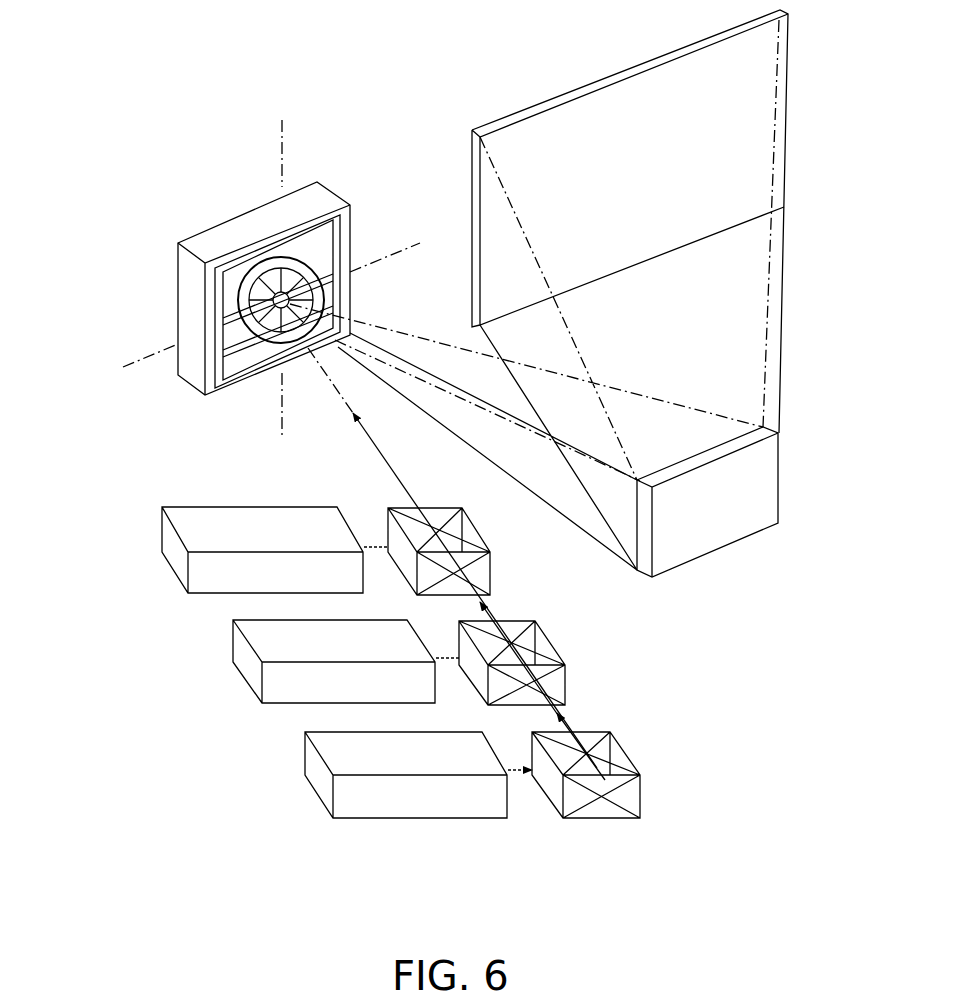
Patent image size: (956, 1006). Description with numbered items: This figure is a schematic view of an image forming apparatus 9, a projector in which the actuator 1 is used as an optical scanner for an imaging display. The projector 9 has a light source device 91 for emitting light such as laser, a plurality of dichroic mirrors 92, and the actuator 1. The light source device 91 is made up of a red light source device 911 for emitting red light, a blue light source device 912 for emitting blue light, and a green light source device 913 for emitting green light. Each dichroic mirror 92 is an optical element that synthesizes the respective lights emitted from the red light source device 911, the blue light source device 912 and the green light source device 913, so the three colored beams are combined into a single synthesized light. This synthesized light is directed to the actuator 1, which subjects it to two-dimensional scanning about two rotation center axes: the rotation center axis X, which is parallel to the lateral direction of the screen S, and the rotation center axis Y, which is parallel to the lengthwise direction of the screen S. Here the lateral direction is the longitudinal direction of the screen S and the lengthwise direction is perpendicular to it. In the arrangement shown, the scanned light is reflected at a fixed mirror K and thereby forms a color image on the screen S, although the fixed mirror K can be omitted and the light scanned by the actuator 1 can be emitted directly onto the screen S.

The image forming apparatus 9 is at (117, 168).
The actuator 1 is at (172, 277).
The light source device 91 is at (84, 600).
The red light source device 911 is at (332, 745).
The blue light source device 912 is at (270, 640).
The green light source device 913 is at (203, 533).
The dichroic mirror 92 is at (490, 536).
The screen S is at (790, 140).
The fixed mirror K is at (758, 493).
The rotation center axis X is at (137, 360).
The rotation center axis Y is at (282, 134).